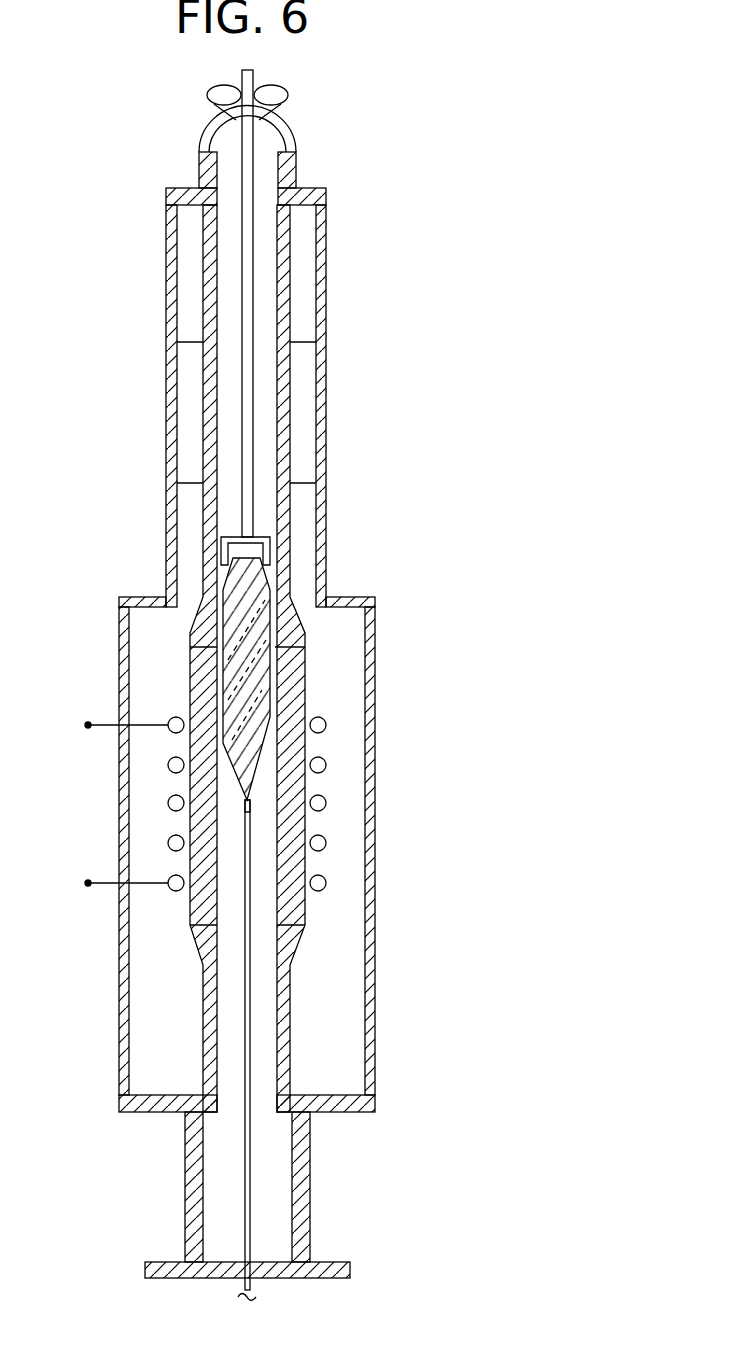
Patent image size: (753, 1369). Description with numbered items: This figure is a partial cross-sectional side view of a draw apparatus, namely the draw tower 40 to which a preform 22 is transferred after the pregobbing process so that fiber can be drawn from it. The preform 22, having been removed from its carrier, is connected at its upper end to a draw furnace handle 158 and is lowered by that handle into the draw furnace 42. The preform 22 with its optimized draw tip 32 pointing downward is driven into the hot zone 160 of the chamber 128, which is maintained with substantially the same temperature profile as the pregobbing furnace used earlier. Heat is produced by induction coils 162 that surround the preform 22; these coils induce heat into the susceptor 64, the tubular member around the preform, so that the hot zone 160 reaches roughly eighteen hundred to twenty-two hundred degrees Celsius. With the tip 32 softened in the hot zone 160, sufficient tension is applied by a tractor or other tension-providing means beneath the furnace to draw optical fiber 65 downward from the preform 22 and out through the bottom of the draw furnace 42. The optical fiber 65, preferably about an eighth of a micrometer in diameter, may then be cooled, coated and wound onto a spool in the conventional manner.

The draw furnace handle 158 is at (255, 232).
The draw tower 40 is at (360, 390).
The preform 22 is at (284, 675).
The susceptor 64 is at (285, 743).
The optimized draw tip 32 is at (235, 765).
The induction coil 162 is at (327, 805).
The hot zone 160 is at (254, 812).
The chamber 128 is at (235, 893).
The draw furnace 42 is at (334, 918).
The optical fiber 65 is at (250, 1190).